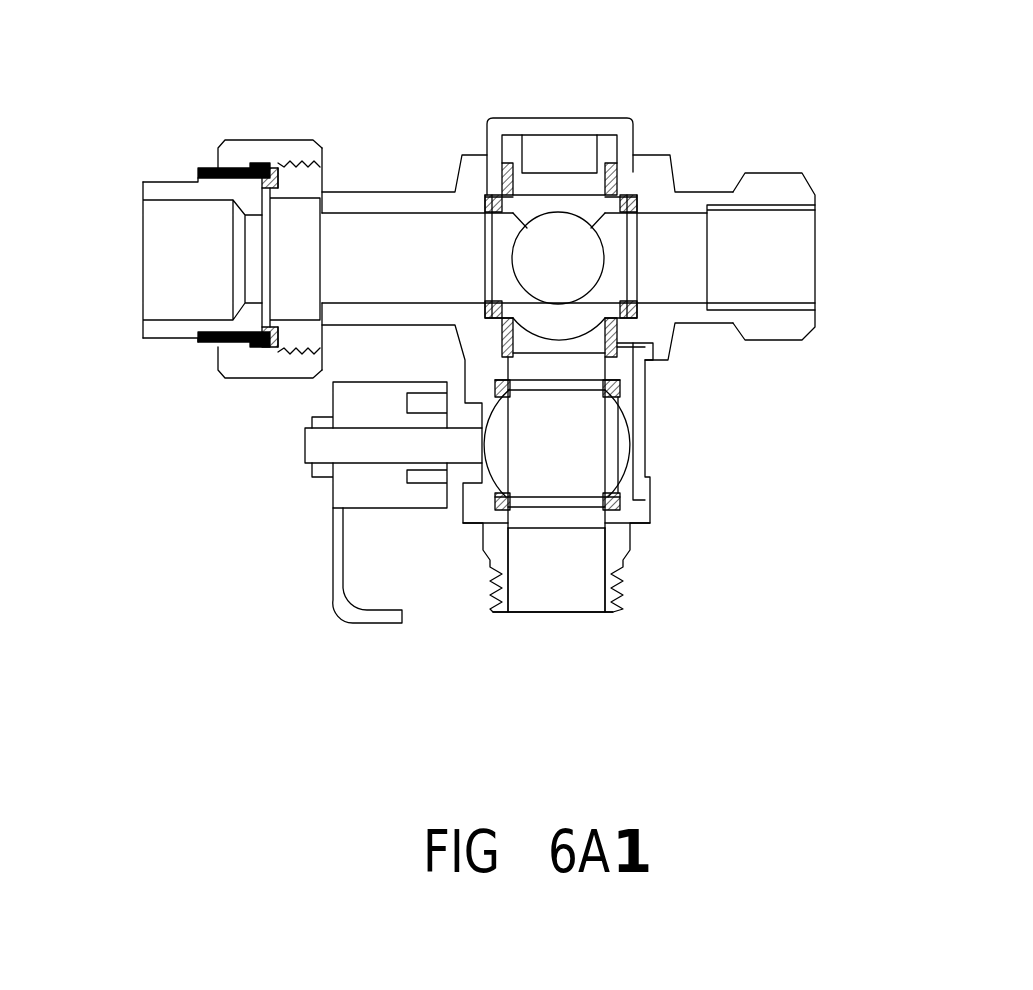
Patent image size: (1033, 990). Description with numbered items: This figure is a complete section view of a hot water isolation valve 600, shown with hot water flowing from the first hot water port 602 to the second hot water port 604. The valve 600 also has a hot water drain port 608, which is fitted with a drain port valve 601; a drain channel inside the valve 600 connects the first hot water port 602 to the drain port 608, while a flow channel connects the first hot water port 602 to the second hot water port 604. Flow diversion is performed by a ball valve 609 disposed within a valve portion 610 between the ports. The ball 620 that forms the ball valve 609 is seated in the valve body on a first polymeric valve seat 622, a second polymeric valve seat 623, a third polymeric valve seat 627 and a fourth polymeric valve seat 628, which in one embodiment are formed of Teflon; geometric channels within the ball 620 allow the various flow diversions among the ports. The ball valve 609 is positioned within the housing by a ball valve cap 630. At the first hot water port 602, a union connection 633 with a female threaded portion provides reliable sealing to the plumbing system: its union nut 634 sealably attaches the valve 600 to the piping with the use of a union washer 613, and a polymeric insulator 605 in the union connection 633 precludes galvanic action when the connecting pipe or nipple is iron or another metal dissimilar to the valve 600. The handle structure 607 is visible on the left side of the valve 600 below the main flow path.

The hot water isolation valve 600 is at (801, 464).
The drain port valve 601 is at (625, 445).
The first hot water port 602 is at (140, 262).
The second hot water port 604 is at (818, 262).
The insulator 605 is at (202, 167).
The handle stem 607 is at (333, 497).
The hot water drain port 608 is at (557, 615).
The ball valve 609 is at (555, 185).
The valve portion 610 is at (748, 185).
The union washer 613 is at (270, 170).
The ball 620 is at (628, 328).
The first polymeric valve seat 622 is at (495, 200).
The second polymeric valve seat 623 is at (640, 318).
The third polymeric valve seat 627 is at (633, 128).
The fourth polymeric valve seat 628 is at (612, 365).
The ball valve cap 630 is at (612, 118).
The union connection 633 is at (165, 190).
The union nut 634 is at (300, 140).